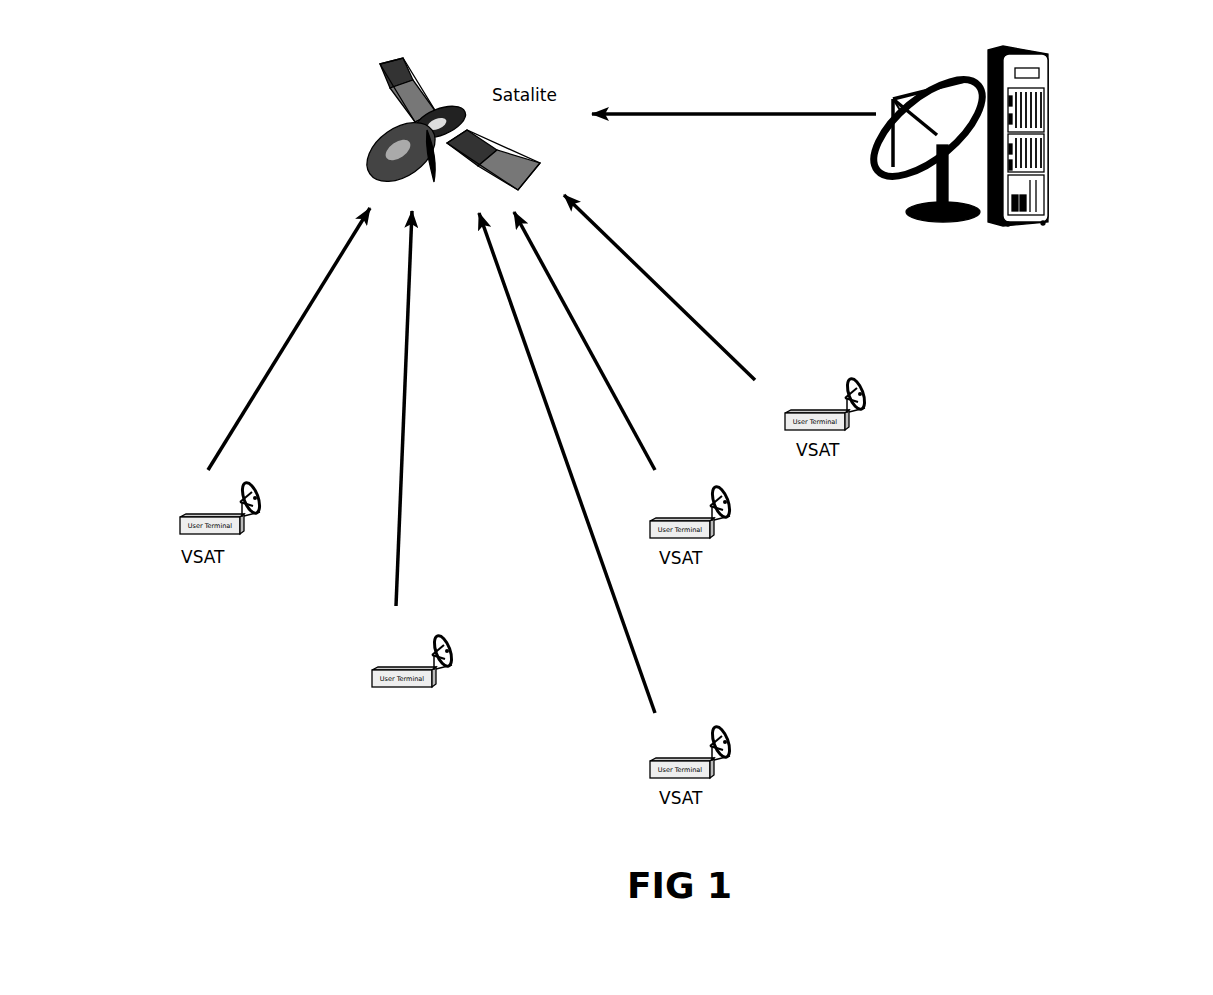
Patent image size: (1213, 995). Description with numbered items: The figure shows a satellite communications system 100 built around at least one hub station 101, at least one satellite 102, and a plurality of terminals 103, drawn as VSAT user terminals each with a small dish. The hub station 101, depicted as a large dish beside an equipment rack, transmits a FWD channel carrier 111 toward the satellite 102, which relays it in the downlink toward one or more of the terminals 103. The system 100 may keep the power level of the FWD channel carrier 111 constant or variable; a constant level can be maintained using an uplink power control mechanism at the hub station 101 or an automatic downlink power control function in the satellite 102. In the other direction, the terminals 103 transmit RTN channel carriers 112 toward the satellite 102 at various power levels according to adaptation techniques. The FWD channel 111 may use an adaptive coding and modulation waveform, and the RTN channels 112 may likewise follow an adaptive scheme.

The satellite communications system 100 is at (1088, 472).
The hub station 101 is at (1061, 105).
The satellite 102 is at (362, 123).
The terminals 103 is at (357, 681).
The FWD channel (carrier) 111 is at (769, 127).
The RTN channels (carriers) 112 is at (555, 455).